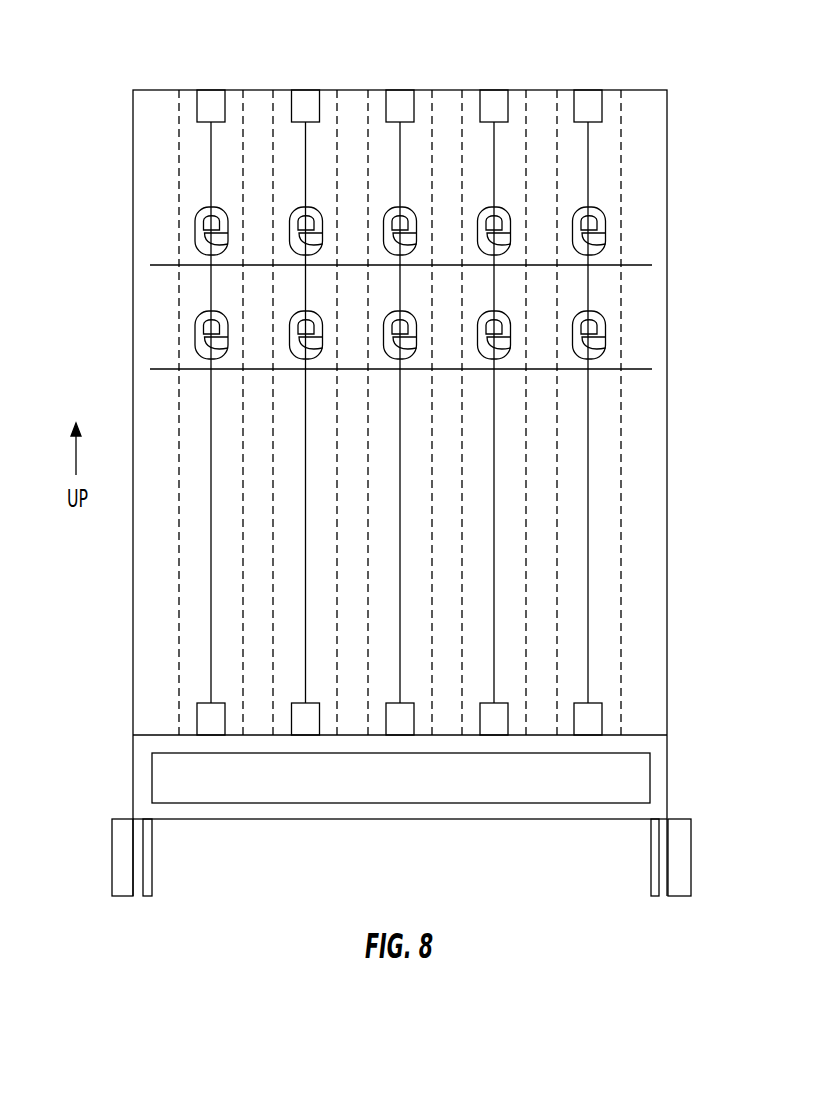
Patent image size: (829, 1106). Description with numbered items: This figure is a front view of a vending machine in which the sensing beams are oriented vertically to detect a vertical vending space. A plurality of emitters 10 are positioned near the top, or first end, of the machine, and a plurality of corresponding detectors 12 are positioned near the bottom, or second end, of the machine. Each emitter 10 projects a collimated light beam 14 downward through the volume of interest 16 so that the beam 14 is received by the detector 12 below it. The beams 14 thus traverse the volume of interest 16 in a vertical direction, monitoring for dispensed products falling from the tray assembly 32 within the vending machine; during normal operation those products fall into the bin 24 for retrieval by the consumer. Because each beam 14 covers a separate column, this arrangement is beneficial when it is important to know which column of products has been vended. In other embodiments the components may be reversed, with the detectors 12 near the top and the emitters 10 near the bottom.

The emitter 10 is at (305, 97).
The detector 12 is at (306, 730).
The collimated light beam 14 is at (211, 554).
The volume of interest 16 is at (179, 205).
The bin 24 is at (540, 793).
The tray assembly 32 is at (625, 238).